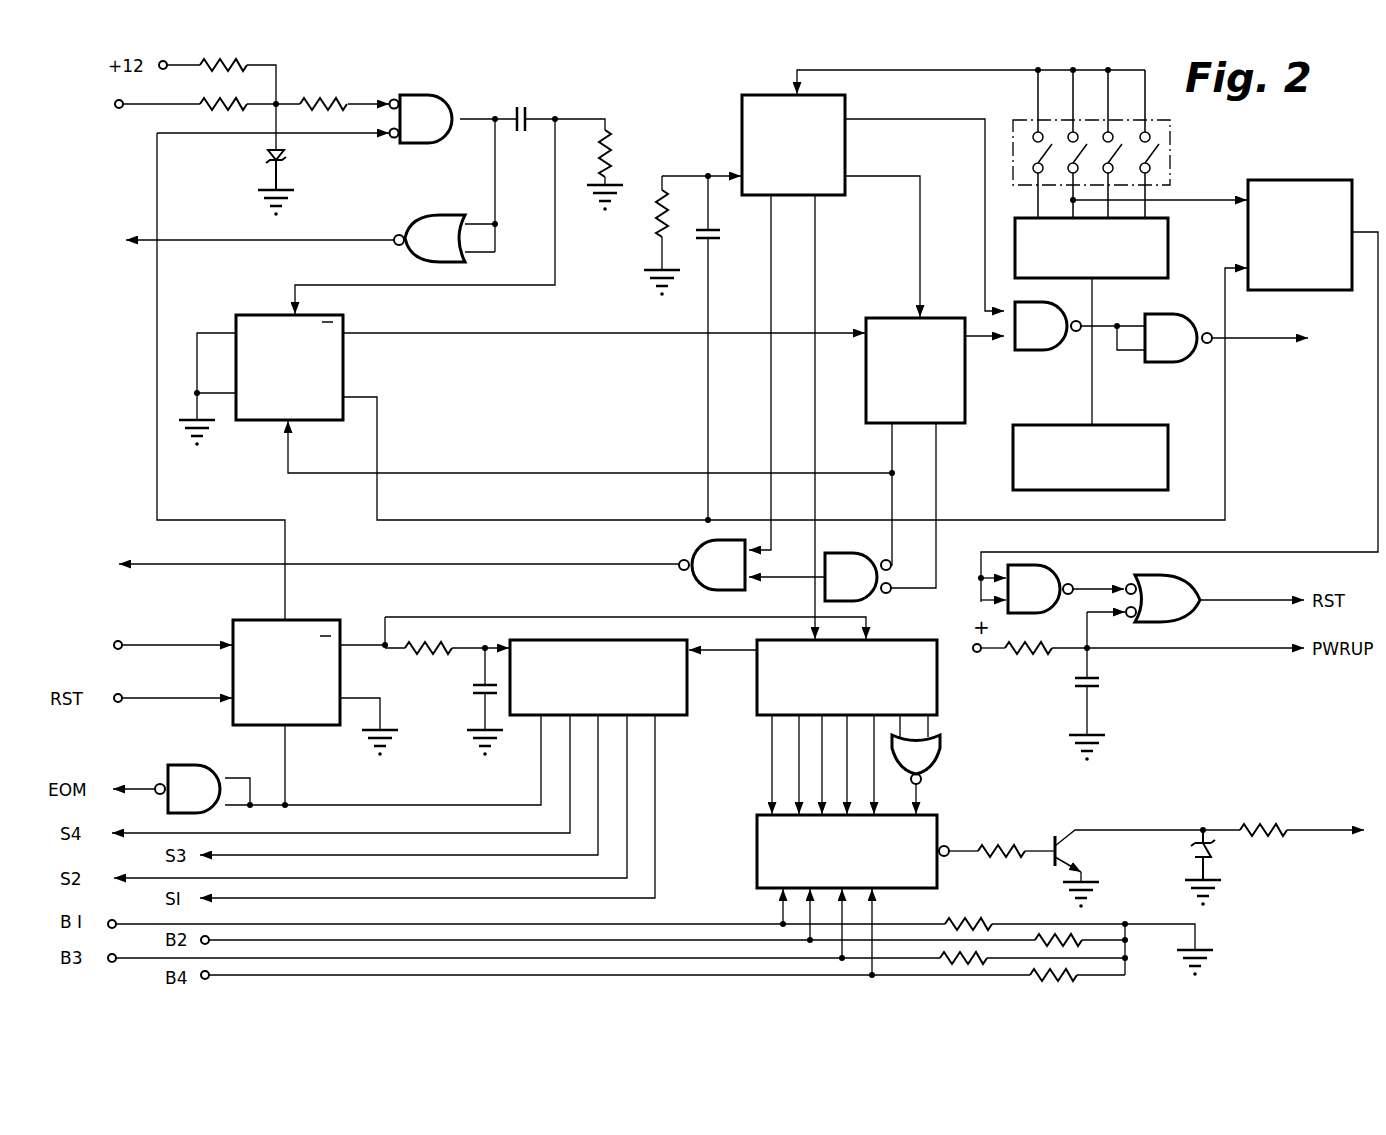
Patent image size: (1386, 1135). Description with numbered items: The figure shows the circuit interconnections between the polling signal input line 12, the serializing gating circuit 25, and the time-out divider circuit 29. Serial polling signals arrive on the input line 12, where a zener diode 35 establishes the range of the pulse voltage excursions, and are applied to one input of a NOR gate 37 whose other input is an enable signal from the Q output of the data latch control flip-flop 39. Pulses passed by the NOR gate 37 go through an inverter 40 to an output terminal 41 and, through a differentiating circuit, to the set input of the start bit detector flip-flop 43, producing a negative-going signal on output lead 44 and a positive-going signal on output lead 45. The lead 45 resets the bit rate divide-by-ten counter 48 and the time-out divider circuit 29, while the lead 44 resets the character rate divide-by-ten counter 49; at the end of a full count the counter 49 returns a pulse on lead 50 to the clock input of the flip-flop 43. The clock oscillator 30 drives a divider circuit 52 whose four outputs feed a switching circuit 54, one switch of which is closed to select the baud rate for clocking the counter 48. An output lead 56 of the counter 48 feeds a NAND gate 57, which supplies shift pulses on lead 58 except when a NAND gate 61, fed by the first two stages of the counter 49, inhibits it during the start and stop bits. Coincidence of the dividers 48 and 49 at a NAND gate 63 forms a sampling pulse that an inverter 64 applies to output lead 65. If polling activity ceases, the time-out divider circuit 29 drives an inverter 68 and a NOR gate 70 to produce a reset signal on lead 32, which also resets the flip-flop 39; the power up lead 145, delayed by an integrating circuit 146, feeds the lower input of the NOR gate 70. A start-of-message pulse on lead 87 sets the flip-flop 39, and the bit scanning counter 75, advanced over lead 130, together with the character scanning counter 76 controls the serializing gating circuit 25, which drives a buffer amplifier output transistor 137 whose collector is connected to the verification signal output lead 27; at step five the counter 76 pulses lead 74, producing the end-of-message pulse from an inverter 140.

The polling signal input line 12 is at (152, 104).
The serializing gating circuit 25 is at (940, 817).
The verification signal output lead 27 is at (1308, 830).
The time-out divider circuit 29 is at (1321, 180).
The clock oscillator 30 is at (1140, 425).
The reset lead 32 is at (180, 700).
The zener diode 35 is at (285, 157).
The NOR gate 37 is at (450, 95).
The data latch control flip-flop 39 is at (312, 620).
The inverter 40 is at (428, 215).
The output terminal 41 is at (138, 244).
The start bit detector flip-flop 43 is at (345, 327).
The output lead 44 is at (397, 334).
The output lead 45 is at (377, 406).
The bit rate divide-by-ten counter 48 is at (846, 108).
The character rate divide-by-ten counter 49 is at (967, 384).
The lead 50 is at (446, 473).
The divider circuit 52 is at (1170, 224).
The switching circuit 54 is at (1172, 140).
The output lead 56 is at (770, 265).
The NAND gate 57 is at (692, 584).
The lead 58 is at (158, 562).
The NAND gate 61 is at (866, 553).
The NAND gate 63 is at (1029, 350).
The inverter 64 is at (1168, 314).
The output lead 65 is at (1253, 340).
The inverter 68 is at (1052, 565).
The NOR gate 70 is at (1170, 622).
The lead 74 is at (320, 805).
The bit scanning counter 75 is at (912, 640).
The character scanning counter 76 is at (686, 642).
The start-of-message output lead 87 is at (152, 645).
The lead 130 is at (817, 254).
The buffer amplifier output transistor 137 is at (1048, 840).
The inverter 140 is at (200, 765).
The power up lead 145 is at (1204, 648).
The integrating circuit 146 is at (1058, 685).